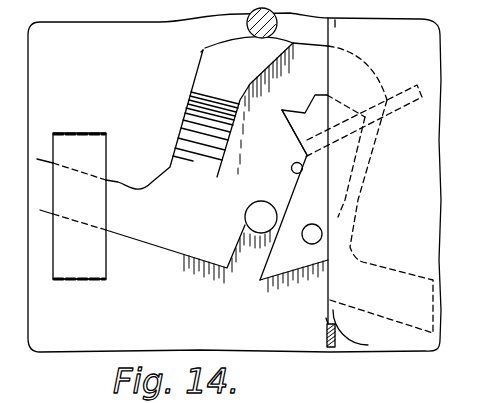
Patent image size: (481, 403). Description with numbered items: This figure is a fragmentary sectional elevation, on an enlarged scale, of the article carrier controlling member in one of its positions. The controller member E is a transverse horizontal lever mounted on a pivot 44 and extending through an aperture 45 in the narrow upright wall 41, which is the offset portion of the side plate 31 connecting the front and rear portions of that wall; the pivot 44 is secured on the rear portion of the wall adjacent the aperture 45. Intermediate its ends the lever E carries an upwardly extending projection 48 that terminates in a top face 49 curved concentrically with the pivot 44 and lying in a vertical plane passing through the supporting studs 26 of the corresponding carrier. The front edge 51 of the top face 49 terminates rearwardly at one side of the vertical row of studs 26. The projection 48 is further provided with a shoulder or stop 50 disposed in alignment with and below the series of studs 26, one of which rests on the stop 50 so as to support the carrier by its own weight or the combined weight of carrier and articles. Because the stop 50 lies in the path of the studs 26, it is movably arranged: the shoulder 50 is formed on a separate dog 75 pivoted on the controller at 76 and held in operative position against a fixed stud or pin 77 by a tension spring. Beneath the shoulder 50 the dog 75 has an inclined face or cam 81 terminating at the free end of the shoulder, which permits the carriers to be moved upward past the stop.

The supporting stud 26 is at (247, 30).
The side plate 31 is at (155, 264).
The narrow upright wall 41 is at (335, 337).
The pivot 44 is at (246, 218).
The aperture 45 is at (326, 318).
The upwardly extending projection 48 is at (187, 108).
The top face 49 is at (201, 51).
The shoulder or stop 50 is at (294, 108).
The front edge 51 is at (303, 44).
The dog 75 is at (328, 198).
The pivot of dog 76 is at (320, 233).
The fixed stud or pin 77 is at (292, 170).
The inclined face or cam 81 is at (293, 140).
The controller member E is at (133, 173).